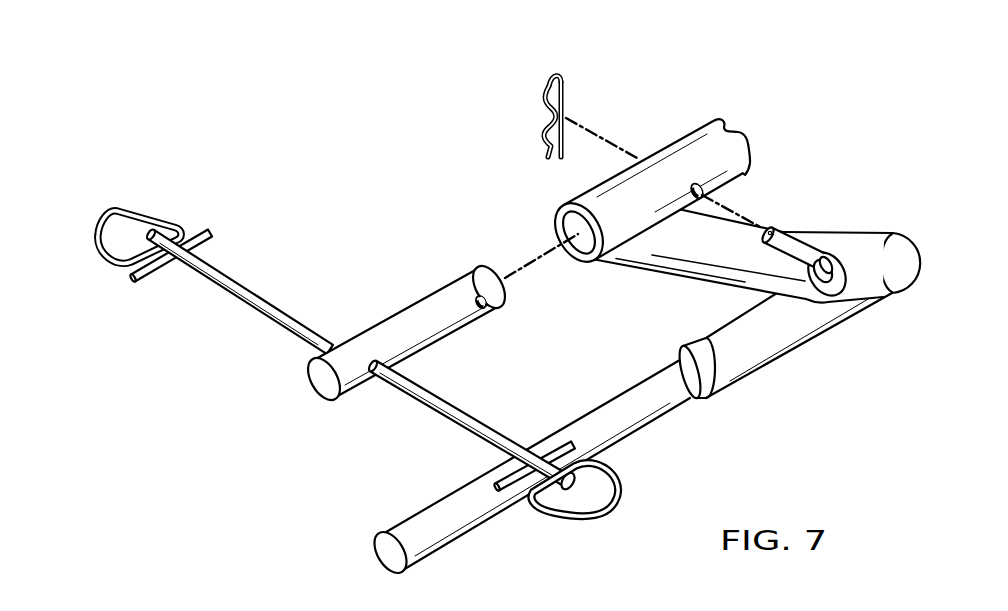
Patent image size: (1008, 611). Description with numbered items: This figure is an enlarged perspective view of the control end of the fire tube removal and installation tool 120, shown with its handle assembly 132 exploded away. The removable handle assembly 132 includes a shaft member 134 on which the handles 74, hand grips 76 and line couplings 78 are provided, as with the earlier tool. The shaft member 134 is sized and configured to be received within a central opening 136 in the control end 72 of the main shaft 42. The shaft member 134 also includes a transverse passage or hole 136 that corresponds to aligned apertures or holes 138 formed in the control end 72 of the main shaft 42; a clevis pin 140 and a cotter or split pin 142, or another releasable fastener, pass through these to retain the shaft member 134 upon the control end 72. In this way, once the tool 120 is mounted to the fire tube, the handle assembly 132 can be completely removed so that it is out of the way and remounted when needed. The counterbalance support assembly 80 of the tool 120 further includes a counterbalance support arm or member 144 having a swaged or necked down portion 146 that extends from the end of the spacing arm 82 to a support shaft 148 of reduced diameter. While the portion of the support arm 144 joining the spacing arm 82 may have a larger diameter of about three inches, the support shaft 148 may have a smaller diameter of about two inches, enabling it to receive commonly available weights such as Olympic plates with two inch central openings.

The main shaft 42 is at (699, 214).
The control end 72 is at (633, 188).
The handles 74 is at (233, 277).
The hand grips 76 is at (157, 280).
The line couplings 78 is at (124, 208).
The counterbalance support assembly 80 is at (826, 237).
The spacing arm 82 is at (673, 259).
The tool 120 is at (508, 303).
The handle assembly 132 is at (322, 400).
The shaft member 134 is at (400, 364).
The transverse passage or hole 136 is at (483, 316).
The aligned apertures or holes 138 is at (697, 200).
The clevis pin 140 is at (781, 234).
The cotter or split pin 142 is at (553, 75).
The counterbalance support arm 144 is at (798, 339).
The swaged or necked down portion 146 is at (727, 396).
The support shaft 148 is at (647, 435).